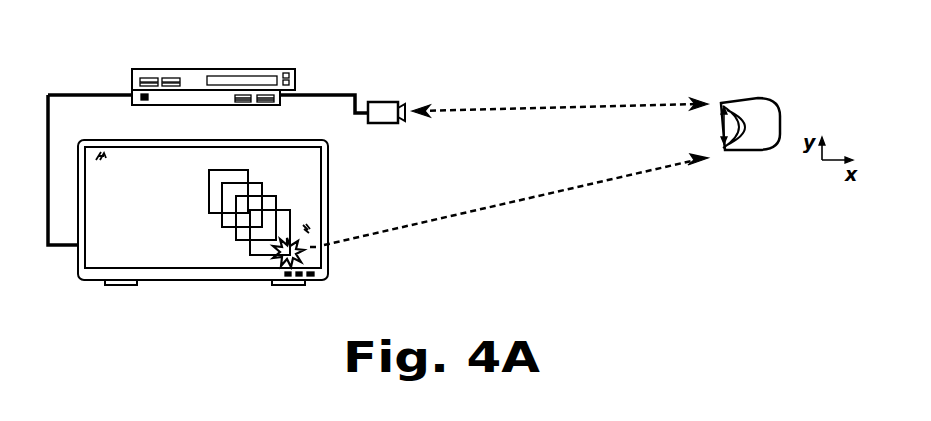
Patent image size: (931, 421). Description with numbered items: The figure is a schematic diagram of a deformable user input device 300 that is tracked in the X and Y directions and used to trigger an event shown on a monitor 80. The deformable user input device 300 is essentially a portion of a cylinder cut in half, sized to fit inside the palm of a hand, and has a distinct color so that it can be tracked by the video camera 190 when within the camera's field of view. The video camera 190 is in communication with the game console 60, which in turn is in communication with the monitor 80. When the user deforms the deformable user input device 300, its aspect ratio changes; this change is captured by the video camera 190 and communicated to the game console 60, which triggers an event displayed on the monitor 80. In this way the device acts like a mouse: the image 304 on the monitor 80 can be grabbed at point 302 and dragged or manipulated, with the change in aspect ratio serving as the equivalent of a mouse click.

The game console 60 is at (287, 70).
The video camera 190 is at (377, 101).
The monitor 80 is at (330, 167).
The point 302 is at (302, 257).
The image 304 is at (262, 249).
The deformable user input device 300 is at (781, 107).